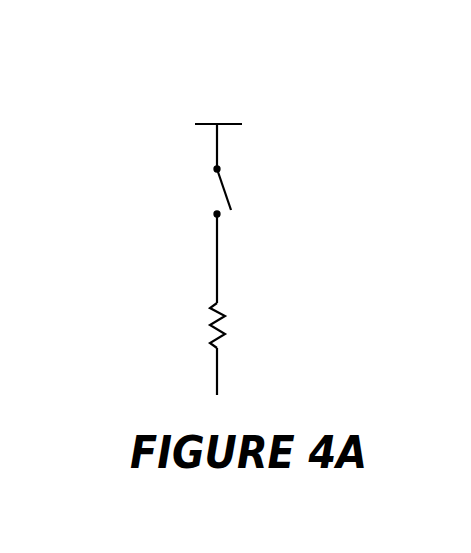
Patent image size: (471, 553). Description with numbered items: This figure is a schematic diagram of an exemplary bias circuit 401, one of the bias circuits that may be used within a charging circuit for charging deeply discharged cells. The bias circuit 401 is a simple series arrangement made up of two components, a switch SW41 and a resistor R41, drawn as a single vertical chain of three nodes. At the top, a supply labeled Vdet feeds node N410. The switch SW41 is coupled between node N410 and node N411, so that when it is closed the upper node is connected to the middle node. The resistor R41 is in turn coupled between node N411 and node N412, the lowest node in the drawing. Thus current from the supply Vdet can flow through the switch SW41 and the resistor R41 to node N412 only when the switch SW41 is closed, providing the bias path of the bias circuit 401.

The bias circuit 401 is at (88, 71).
The detection voltage supply Vdet is at (220, 105).
The node N410 is at (190, 139).
The switch SW41 is at (202, 191).
The node N411 is at (190, 260).
The resistor R41 is at (204, 325).
The node N412 is at (202, 376).